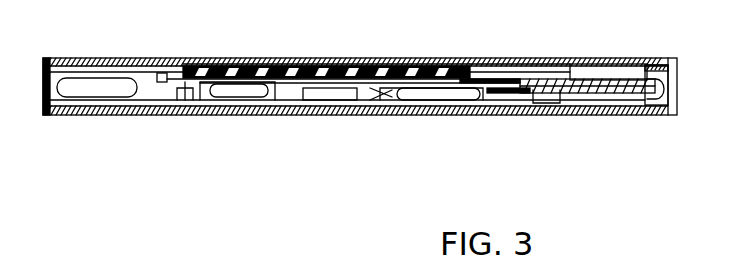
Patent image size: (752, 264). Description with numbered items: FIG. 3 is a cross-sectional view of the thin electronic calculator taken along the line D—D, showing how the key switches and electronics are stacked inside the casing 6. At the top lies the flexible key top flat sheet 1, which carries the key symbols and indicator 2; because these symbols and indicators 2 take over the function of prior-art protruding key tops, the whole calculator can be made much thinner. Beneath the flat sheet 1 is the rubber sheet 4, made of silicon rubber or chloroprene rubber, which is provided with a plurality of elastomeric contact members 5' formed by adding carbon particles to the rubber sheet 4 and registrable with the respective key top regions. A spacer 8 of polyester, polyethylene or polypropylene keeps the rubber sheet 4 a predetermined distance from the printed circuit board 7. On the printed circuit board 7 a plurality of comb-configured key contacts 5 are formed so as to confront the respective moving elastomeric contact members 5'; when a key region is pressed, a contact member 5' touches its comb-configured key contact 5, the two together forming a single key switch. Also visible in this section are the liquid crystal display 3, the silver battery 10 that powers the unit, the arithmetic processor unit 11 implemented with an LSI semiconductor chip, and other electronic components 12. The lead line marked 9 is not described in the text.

The flexible key top flat sheet 1 is at (100, 59).
The symbols and indicator 2 is at (433, 63).
The liquid crystal display 3 is at (627, 63).
The rubber sheet 4 is at (363, 63).
The comb-configured key contact 5 is at (348, 133).
The elastomeric contact member 5' is at (432, 40).
The casing 6 is at (677, 110).
The printed circuit board 7 is at (195, 82).
The spacer 8 is at (243, 70).
The adjusting screw 9 is at (553, 78).
The silver battery 10 is at (77, 93).
The arithmetic processor unit 11 is at (435, 95).
The other electronic components 12 is at (252, 90).